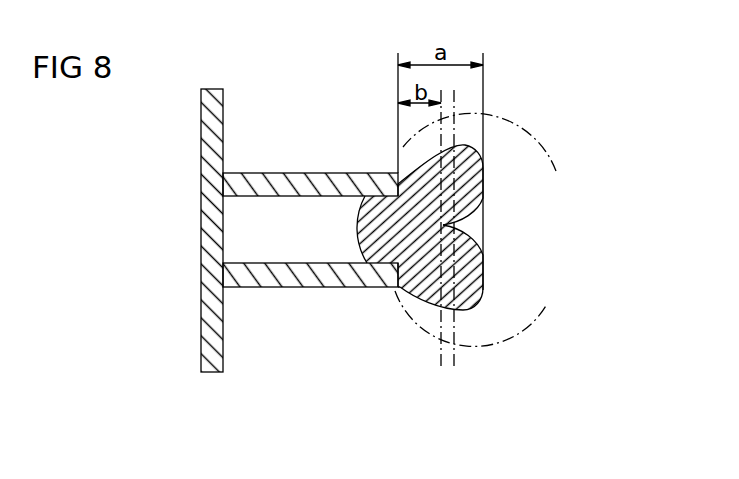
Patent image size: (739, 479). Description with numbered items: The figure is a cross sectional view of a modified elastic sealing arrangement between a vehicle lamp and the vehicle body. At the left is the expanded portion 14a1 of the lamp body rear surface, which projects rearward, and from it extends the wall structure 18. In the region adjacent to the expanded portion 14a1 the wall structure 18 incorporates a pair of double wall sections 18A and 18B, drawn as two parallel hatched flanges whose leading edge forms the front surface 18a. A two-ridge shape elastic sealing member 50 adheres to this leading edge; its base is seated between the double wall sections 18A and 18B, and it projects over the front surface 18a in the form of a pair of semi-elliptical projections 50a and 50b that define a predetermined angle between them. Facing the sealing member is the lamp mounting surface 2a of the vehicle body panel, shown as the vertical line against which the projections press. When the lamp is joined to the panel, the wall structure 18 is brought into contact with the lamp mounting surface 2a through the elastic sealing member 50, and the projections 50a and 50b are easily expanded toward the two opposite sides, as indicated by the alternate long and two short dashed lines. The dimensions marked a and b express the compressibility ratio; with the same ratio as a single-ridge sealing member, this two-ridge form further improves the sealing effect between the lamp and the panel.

The expanded portion 14a1 is at (225, 337).
The wall structure 18 is at (319, 226).
The wall section 18A is at (317, 188).
The wall section 18B is at (287, 287).
The front surface 18a is at (414, 294).
The two-ridge shape elastic sealing member 50 is at (496, 229).
The semi-elliptical projection 50a is at (465, 171).
The semi-elliptical projection 50b is at (467, 292).
The lamp mounting surface 2a is at (440, 357).